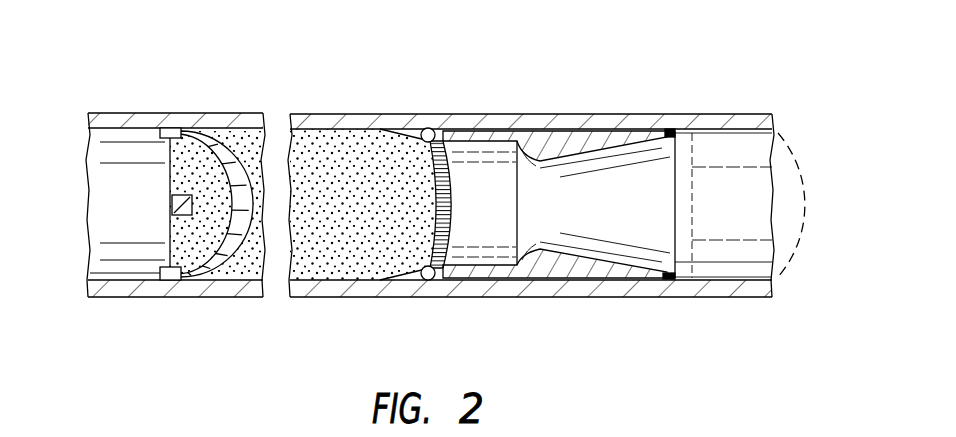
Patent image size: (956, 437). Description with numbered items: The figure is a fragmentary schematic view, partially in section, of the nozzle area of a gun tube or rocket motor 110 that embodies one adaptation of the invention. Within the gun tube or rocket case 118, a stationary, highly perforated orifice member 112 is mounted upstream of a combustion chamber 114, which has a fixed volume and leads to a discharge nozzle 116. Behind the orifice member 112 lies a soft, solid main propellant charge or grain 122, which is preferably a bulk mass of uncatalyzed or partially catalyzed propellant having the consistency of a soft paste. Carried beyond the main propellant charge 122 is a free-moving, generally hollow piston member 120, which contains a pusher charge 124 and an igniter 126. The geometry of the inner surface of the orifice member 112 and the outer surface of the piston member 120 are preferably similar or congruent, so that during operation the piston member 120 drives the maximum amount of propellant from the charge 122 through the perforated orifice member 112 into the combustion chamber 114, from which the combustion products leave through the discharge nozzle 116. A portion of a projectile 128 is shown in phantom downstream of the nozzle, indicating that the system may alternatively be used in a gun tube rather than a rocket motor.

The gun tube or rocket motor 110 is at (543, 55).
The orifice member 112 is at (455, 227).
The combustion chamber 114 is at (592, 204).
The discharge nozzle 116 is at (587, 150).
The gun tube or rocket case 118 is at (661, 298).
The piston member 120 is at (201, 258).
The main propellant charge or grain 122 is at (352, 253).
The pusher charge 124 is at (198, 160).
The igniter 126 is at (172, 205).
The projectile 128 is at (790, 152).